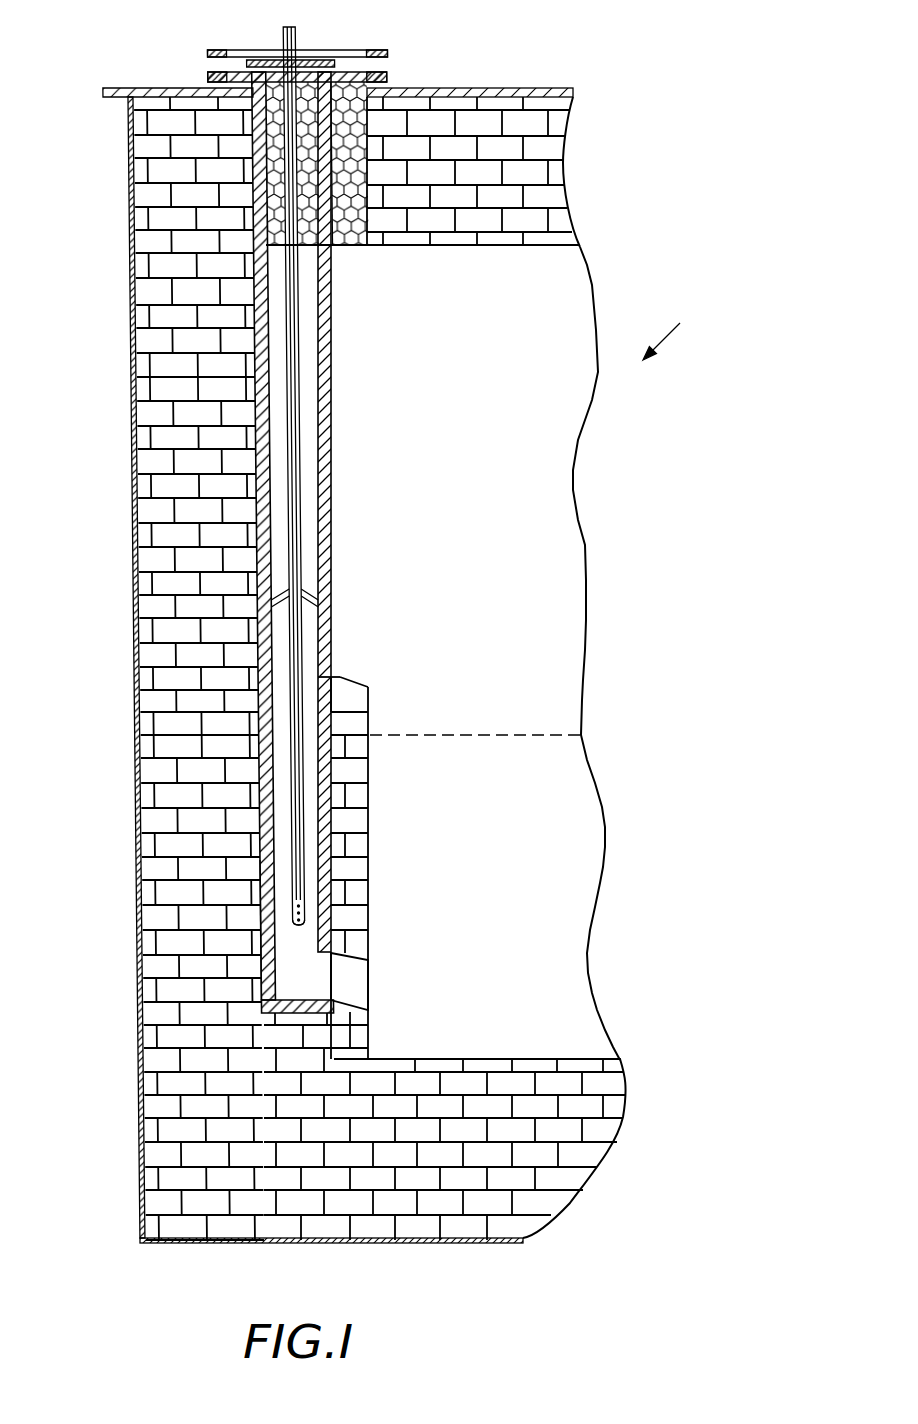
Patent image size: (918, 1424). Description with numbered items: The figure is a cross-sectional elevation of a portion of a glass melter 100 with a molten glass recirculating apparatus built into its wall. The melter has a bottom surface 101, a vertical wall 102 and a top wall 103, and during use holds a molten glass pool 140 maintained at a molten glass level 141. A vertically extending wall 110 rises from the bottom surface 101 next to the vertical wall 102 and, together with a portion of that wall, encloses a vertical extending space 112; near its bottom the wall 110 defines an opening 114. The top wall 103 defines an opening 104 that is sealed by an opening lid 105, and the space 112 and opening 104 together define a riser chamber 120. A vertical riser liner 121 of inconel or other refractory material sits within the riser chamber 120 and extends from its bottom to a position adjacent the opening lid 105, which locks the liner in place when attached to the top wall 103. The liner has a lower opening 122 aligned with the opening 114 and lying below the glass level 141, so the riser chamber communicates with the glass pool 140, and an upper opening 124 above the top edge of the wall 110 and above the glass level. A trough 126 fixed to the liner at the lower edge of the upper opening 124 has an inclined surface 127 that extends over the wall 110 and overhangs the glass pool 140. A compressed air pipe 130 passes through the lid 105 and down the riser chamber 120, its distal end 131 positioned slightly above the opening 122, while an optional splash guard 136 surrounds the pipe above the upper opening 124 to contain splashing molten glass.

The glass melter 100 is at (692, 326).
The bottom surface 101 is at (473, 1059).
The vertical wall 102 is at (137, 582).
The top wall 103 is at (498, 90).
The opening 104 is at (368, 128).
The opening lid 105 is at (344, 50).
The vertically extending wall 110 is at (368, 893).
The vertical extending space 112 is at (368, 822).
The opening 114 is at (368, 983).
The riser chamber 120 is at (257, 845).
The vertical riser liner 121 is at (262, 877).
The opening 122 is at (327, 973).
The upper opening 124 is at (323, 643).
The trough 126 is at (337, 677).
The inclined surface 127 is at (350, 680).
The compressed air pipe 130 is at (287, 420).
The distal end 131 is at (290, 927).
The splash guard 136 is at (312, 593).
The molten glass pool 140 is at (558, 897).
The molten glass level 141 is at (545, 735).